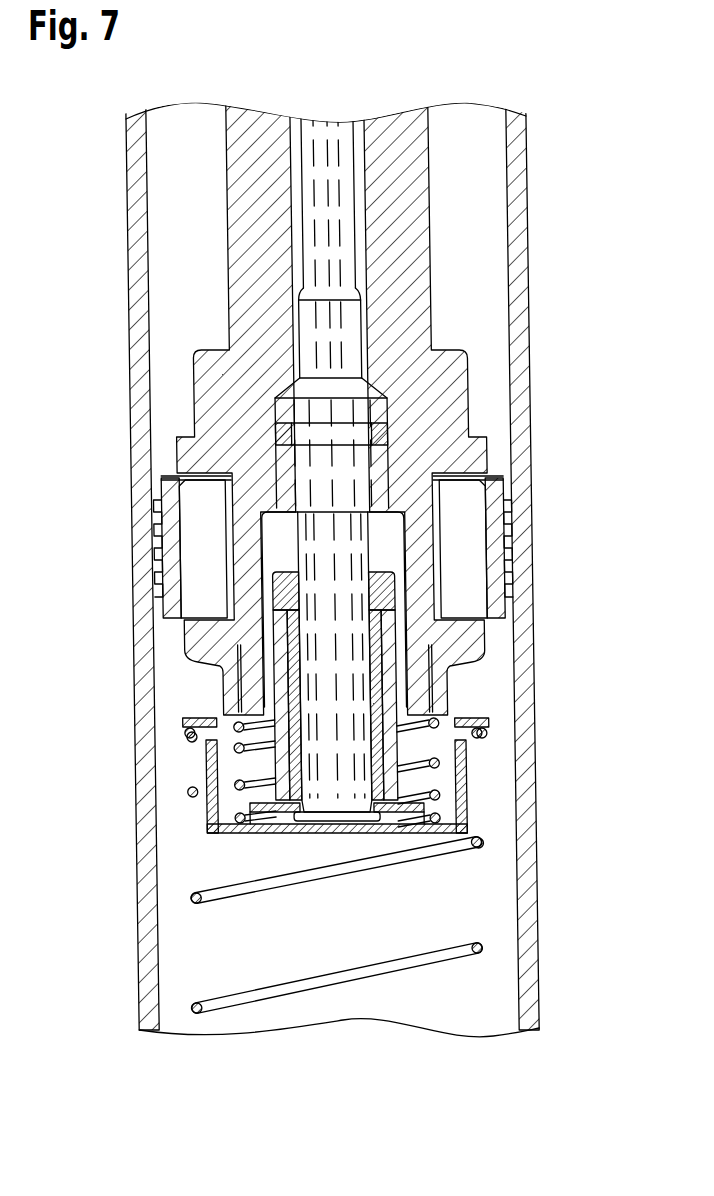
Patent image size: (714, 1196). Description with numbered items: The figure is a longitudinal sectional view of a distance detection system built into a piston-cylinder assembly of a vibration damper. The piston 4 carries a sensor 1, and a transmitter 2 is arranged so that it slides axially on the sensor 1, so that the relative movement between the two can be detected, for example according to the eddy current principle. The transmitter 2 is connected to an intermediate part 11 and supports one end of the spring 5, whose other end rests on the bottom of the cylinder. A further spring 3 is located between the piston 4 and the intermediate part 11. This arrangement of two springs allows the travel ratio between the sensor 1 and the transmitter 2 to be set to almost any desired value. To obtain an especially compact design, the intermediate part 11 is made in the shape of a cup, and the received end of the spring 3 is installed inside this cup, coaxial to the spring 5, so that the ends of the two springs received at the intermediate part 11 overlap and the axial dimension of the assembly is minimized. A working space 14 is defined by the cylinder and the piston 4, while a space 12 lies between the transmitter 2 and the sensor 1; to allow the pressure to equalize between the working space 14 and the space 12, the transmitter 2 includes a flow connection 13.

The sensor 1 is at (345, 676).
The transmitter 2 is at (388, 582).
The spring 3 is at (440, 752).
The piston 4 is at (494, 549).
The spring 5 is at (448, 957).
The intermediate part 11 is at (470, 797).
The space 12 is at (387, 538).
The flow connection 13 is at (268, 598).
The working space 14 is at (462, 903).